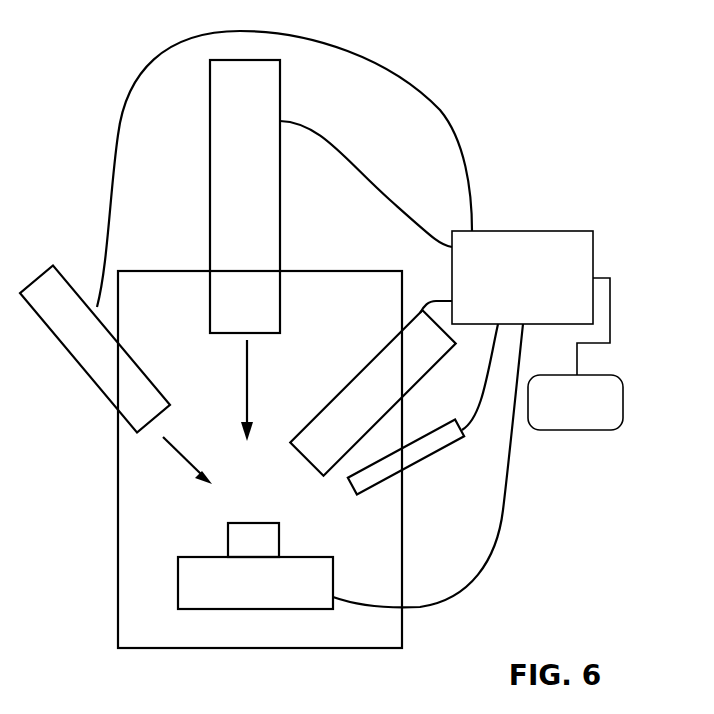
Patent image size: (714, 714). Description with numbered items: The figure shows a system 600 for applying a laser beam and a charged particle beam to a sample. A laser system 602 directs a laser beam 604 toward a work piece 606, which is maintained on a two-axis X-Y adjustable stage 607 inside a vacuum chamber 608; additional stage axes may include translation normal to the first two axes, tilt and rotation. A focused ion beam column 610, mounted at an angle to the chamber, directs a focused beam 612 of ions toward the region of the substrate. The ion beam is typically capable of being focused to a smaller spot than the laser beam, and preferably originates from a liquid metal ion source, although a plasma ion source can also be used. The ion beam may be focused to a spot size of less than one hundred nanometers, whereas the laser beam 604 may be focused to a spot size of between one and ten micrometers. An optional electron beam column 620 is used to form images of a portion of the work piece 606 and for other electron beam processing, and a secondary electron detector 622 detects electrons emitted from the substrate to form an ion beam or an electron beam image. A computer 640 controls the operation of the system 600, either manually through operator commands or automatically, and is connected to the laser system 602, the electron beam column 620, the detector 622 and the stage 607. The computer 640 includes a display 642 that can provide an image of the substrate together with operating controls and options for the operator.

The system 600 is at (113, 62).
The laser system 602 is at (280, 230).
The laser beam 604 is at (248, 356).
The work piece 606 is at (280, 548).
The two-axis X-Y adjustable stage 607 is at (334, 572).
The vacuum chamber 608 is at (118, 467).
The focused ion beam column 610 is at (98, 388).
The focused beam of ions 612 is at (184, 458).
The electron beam column 620 is at (364, 351).
The secondary electron detector 622 is at (418, 464).
The computer 640 is at (564, 231).
The display 642 is at (577, 430).